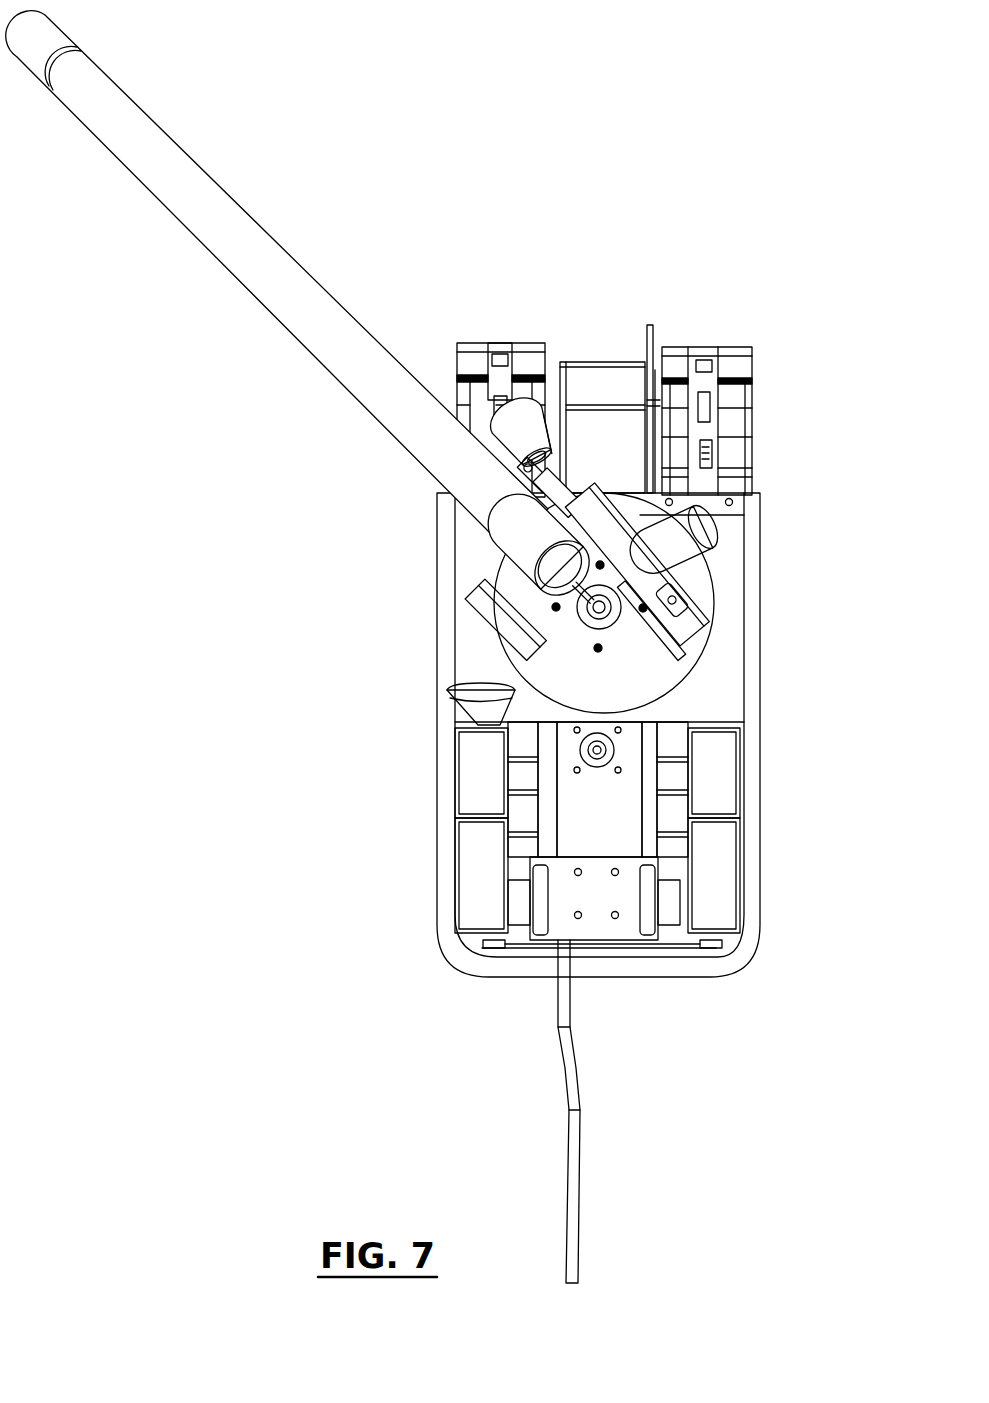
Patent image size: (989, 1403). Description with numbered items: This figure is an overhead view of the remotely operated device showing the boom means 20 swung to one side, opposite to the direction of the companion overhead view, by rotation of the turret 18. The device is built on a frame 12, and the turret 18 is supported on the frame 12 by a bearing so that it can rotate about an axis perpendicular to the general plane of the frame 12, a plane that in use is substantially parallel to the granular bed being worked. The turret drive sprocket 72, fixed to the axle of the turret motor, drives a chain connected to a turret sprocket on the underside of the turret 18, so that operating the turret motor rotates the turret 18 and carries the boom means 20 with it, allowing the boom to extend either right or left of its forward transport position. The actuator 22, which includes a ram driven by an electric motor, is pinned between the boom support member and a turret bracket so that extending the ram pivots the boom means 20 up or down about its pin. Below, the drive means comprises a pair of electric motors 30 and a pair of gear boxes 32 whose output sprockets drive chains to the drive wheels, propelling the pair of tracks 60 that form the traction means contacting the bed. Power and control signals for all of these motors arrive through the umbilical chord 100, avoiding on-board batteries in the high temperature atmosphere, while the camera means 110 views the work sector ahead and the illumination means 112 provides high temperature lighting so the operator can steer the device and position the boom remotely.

The frame 12 is at (727, 632).
The turret 18 is at (703, 597).
The boom means 20 is at (167, 128).
The actuator 22 is at (705, 514).
The electric motors 30 is at (470, 782).
The gear boxes 32 is at (463, 862).
The tracks 60 is at (475, 343).
The turret drive sprocket 72 is at (620, 757).
The umbilical chord 100 is at (577, 1065).
The camera means 110 is at (475, 615).
The illumination means 112 is at (538, 415).